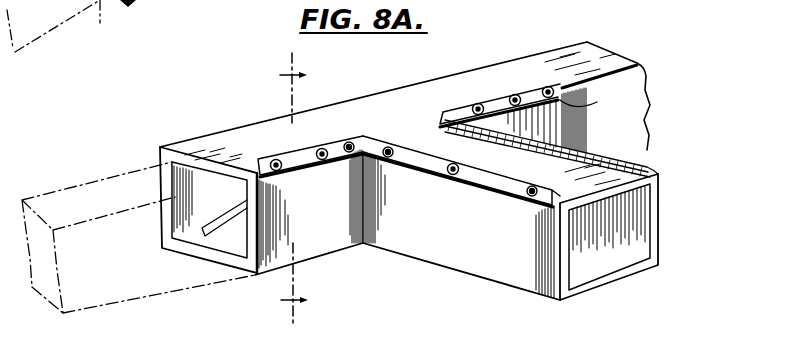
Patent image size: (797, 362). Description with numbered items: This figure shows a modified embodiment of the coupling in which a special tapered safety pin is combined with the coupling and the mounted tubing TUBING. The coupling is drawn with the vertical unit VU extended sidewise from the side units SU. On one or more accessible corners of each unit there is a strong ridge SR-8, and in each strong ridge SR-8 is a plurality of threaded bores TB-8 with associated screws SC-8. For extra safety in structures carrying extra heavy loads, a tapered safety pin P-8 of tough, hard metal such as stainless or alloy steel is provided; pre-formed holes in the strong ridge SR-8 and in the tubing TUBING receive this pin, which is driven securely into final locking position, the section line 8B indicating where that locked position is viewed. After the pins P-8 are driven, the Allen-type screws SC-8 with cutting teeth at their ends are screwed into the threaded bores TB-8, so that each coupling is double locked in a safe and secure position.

The side unit SU is at (204, 140).
The strong ridge SR-8 is at (257, 167).
The tapered safety pin P-8 is at (325, 149).
The screw SC-8 is at (388, 147).
The threaded bore TB-8 is at (333, 165).
The vertical unit VU is at (527, 278).
The tubing TUBING is at (598, 27).
The section line 8B is at (312, 188).